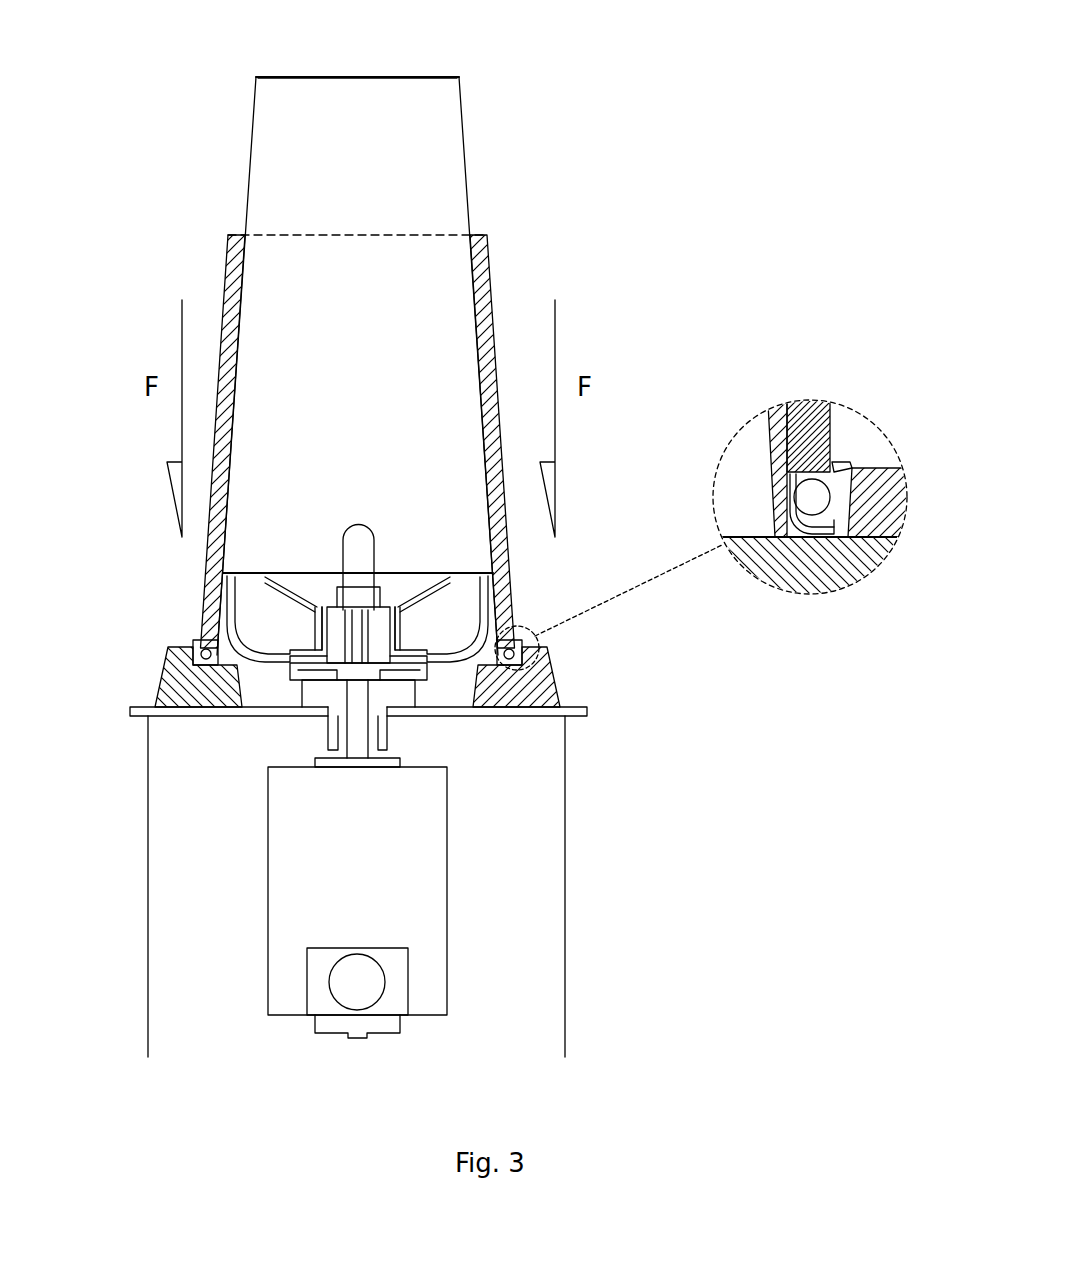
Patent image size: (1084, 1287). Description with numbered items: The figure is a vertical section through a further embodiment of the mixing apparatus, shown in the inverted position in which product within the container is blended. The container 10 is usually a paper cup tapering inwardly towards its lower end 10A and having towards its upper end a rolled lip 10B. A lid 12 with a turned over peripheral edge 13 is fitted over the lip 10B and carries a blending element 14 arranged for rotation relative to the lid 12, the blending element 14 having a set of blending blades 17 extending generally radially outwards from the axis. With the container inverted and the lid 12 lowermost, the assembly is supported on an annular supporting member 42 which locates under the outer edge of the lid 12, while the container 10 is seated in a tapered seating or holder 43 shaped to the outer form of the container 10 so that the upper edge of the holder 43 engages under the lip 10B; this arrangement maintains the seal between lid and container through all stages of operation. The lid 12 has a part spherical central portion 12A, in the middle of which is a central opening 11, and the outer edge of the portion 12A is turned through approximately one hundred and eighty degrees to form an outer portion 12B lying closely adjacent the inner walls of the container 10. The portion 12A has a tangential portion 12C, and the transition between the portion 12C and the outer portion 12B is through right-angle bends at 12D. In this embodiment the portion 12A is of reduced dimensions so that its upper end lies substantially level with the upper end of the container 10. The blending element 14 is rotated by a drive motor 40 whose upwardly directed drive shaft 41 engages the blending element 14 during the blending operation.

The container 10 is at (468, 172).
The lower end 10A is at (415, 77).
The rolled lip 10B is at (181, 646).
The tapered seating 43 is at (226, 295).
The annular supporting member 42 is at (170, 688).
The turned over peripheral edge 13 is at (555, 663).
The lid 12 is at (360, 617).
The part spherical central portion 12A is at (457, 675).
The outer portion 12B is at (462, 600).
The tangential portion 12C is at (443, 572).
The right-angle bends 12D is at (486, 582).
The central opening 11 is at (313, 637).
The blending blades 17 is at (272, 580).
The blending element 14 is at (313, 553).
The drive motor 40 is at (492, 956).
The drive shaft 41 is at (357, 738).